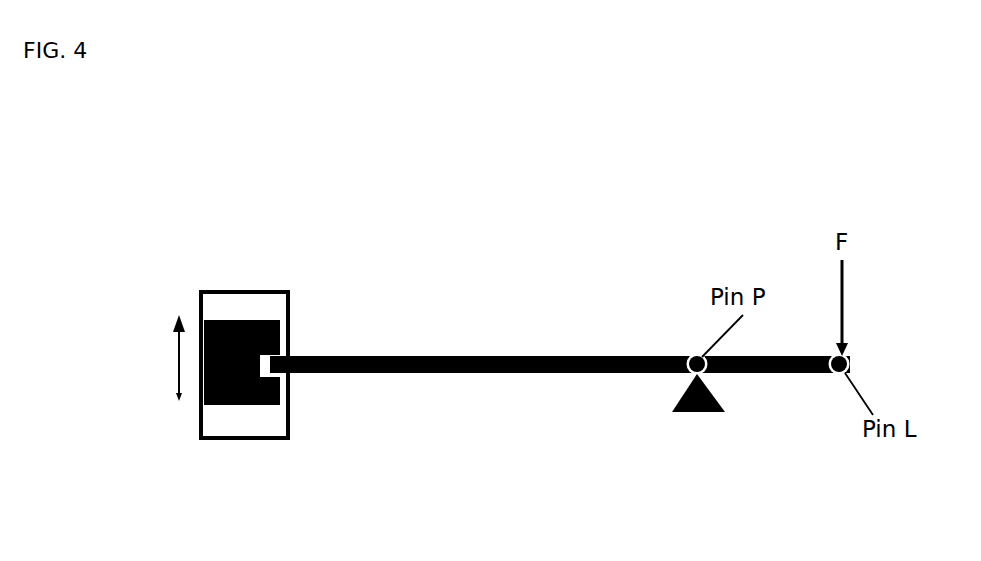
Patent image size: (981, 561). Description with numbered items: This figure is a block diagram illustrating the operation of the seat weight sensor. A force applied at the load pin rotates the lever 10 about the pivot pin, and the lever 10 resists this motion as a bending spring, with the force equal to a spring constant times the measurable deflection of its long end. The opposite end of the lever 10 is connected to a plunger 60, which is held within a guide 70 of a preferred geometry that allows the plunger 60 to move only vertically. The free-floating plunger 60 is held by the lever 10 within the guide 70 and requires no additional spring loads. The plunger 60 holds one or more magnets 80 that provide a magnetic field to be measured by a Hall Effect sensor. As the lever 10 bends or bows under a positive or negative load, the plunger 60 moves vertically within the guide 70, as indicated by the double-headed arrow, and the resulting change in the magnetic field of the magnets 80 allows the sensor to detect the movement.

The lever 10 is at (508, 372).
The plunger 60 is at (281, 330).
The guide 70 is at (283, 450).
The magnets 80 is at (203, 373).